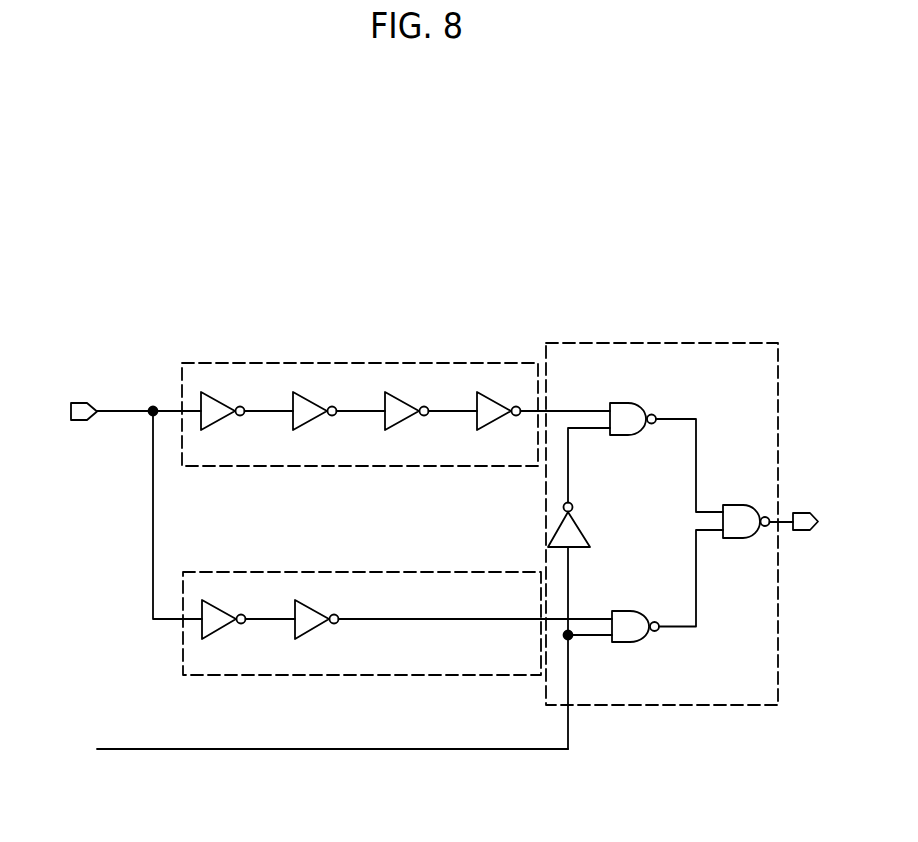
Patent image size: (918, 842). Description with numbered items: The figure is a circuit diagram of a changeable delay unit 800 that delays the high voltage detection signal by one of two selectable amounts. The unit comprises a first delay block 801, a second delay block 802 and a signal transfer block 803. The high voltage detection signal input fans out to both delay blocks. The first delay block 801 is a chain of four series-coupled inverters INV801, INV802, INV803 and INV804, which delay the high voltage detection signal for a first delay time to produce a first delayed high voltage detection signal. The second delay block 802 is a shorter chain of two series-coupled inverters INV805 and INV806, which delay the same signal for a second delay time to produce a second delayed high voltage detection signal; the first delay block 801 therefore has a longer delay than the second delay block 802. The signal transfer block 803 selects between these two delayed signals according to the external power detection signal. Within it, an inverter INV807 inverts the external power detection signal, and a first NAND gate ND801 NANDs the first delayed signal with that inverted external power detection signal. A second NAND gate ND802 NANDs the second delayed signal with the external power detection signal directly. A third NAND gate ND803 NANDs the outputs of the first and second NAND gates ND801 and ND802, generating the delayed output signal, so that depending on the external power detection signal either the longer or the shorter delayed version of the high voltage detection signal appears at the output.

The changeable delay unit 800 is at (672, 184).
The first delay block 801 is at (377, 363).
The second delay block 802 is at (380, 572).
The signal transfer block 803 is at (612, 343).
The inverter INV801 is at (222, 428).
The inverter INV802 is at (317, 428).
The inverter INV803 is at (409, 428).
The inverter INV804 is at (501, 428).
The inverter INV805 is at (226, 636).
The inverter INV806 is at (320, 636).
The inverter INV807 is at (581, 531).
The first NAND gate ND801 is at (618, 403).
The second NAND gate ND802 is at (622, 611).
The third NAND gate ND803 is at (736, 505).